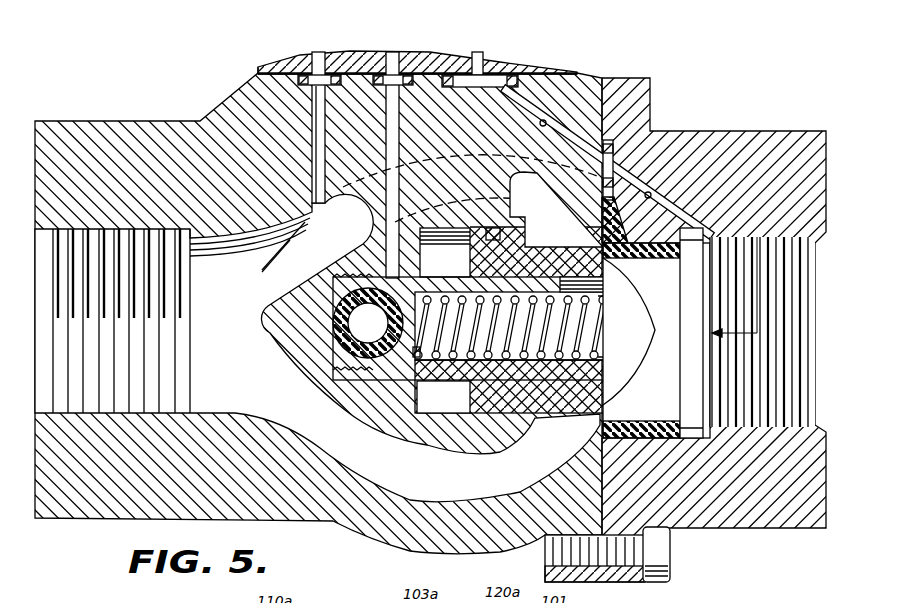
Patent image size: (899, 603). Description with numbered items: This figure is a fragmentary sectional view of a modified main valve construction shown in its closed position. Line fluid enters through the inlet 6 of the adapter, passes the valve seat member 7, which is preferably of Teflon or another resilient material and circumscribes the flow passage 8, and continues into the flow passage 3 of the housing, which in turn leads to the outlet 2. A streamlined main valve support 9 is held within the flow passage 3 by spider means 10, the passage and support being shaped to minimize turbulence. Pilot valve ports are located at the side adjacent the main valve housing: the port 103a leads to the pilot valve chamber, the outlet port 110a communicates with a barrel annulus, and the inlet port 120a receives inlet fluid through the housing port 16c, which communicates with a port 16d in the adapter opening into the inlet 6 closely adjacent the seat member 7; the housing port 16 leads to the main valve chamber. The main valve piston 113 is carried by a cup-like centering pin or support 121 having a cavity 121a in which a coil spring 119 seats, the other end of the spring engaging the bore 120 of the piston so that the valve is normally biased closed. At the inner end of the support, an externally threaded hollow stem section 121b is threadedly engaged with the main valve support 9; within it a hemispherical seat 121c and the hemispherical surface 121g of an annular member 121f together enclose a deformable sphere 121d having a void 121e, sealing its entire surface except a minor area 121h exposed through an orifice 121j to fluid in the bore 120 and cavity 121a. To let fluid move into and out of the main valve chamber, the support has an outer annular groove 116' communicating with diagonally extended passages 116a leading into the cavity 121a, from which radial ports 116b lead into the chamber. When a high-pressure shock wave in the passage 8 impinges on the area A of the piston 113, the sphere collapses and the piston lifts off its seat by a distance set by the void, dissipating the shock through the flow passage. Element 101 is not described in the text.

The outlet 2 is at (55, 414).
The inlet 6 is at (814, 426).
The valve seat member 7 is at (662, 265).
The flow passage 8 is at (670, 373).
The main valve support 9 is at (280, 333).
The spider means 10 is at (370, 203).
The port 16 is at (402, 123).
The port 16c is at (547, 123).
The port 16d is at (700, 133).
The cover plate 101 is at (440, 66).
The port 103a is at (470, 57).
The outlet port 110a is at (315, 67).
The main valve piston 113 is at (557, 400).
The outer annular groove 116' is at (352, 229).
The diagonally extended passages 116a is at (368, 323).
The radial ports 116b is at (440, 460).
The coil spring 119 is at (579, 358).
The bore 120 is at (582, 277).
The inlet port 120a is at (495, 63).
The centering pin or support 121 is at (474, 345).
The cavity 121a is at (535, 292).
The hollow stem section 121b is at (357, 375).
The hemispherical seat 121c is at (390, 430).
The deformable sphere 121d is at (261, 267).
The void 121e is at (336, 350).
The annular member 121f is at (360, 372).
The hemispherical surface 121g is at (372, 229).
The minor area 121h is at (440, 383).
The orifice 121j is at (430, 352).
The area A is at (648, 312).
The flow passage 3 is at (441, 490).